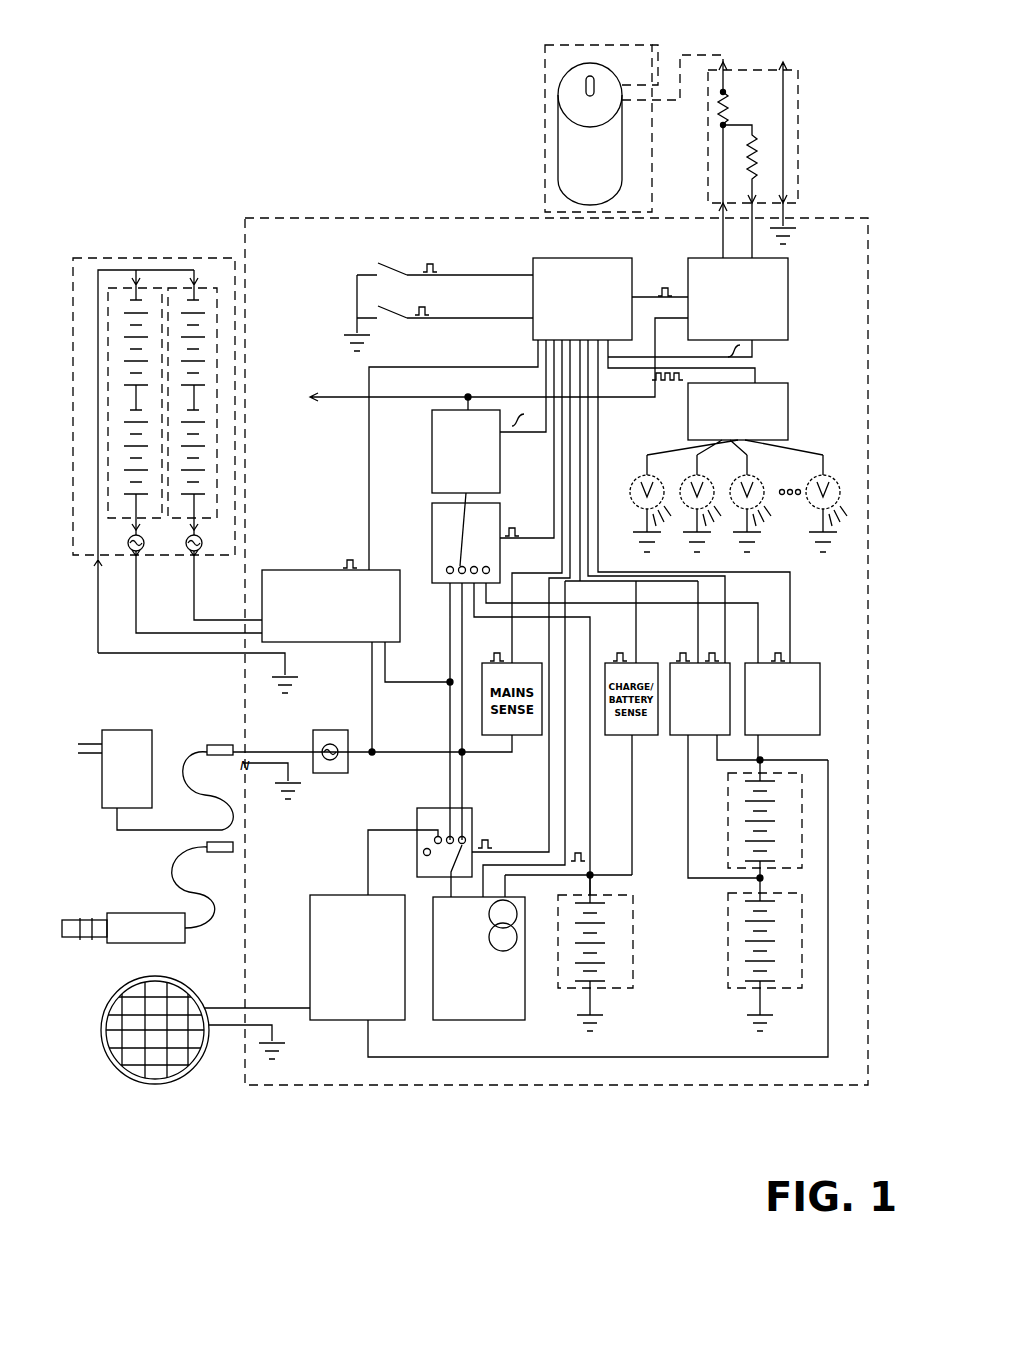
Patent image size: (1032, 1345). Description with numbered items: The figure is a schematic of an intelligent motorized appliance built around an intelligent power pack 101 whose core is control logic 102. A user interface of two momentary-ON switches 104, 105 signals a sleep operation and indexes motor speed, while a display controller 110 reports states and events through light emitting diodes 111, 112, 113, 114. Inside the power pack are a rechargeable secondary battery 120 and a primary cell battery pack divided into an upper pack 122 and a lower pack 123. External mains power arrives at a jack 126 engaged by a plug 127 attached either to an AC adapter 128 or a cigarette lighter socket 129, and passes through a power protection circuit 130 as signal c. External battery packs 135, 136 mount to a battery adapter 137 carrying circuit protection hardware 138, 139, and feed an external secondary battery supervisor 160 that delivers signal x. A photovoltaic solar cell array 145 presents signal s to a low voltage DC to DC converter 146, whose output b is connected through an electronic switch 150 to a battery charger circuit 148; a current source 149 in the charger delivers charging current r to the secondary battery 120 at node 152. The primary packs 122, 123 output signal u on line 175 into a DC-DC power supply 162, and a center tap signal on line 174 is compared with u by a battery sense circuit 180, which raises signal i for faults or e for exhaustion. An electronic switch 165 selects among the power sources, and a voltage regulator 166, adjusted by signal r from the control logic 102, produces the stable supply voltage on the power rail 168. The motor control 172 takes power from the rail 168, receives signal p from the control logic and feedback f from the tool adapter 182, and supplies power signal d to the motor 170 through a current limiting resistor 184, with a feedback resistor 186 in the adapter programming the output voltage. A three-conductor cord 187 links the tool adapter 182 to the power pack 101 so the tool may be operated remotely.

The intelligent power pack 101 is at (410, 218).
The control logic 102 is at (545, 258).
The momentary-ON switch 104 is at (398, 270).
The momentary-ON switch 105 is at (408, 310).
The display controller 110 is at (790, 410).
The light emitting diode 111 is at (630, 480).
The light emitting diode 112 is at (686, 503).
The light emitting diode 113 is at (738, 505).
The light emitting diode 114 is at (810, 500).
The rechargeable secondary battery 120 is at (637, 941).
The upper primary cell battery pack 122 is at (800, 812).
The lower primary cell battery pack 123 is at (802, 932).
The jack 126 is at (253, 752).
The plug 127 is at (214, 745).
The AC adapter 128 is at (102, 800).
The cigarette lighter socket 129 is at (80, 913).
The power protection circuit 130 is at (352, 773).
The external battery pack 135 is at (118, 285).
The external battery pack 136 is at (200, 285).
The battery adapter 137 is at (88, 258).
The circuit protection hardware 138 is at (150, 552).
The circuit protection hardware 139 is at (208, 552).
The photovoltaic solar cell array 145 is at (132, 1086).
The low voltage DC to DC converter 146 is at (310, 962).
The battery charger circuit 148 is at (473, 1020).
The current source 149 is at (495, 948).
The electronic switch 150 is at (468, 812).
The node 152 is at (598, 876).
The external secondary battery supervisor 160 is at (312, 570).
The DC-DC power supply 162 is at (820, 715).
The electronic switch 165 is at (432, 508).
The voltage regulator 166 is at (432, 465).
The power rail 168 is at (344, 408).
The motor 170 is at (545, 145).
The motor control 172 is at (788, 292).
The center tap line 174 is at (688, 815).
The power signal line 175 is at (814, 760).
The battery sense circuit 180 is at (670, 663).
The tool adapter 182 is at (800, 148).
The current limiting resistor 184 is at (722, 93).
The feedback resistor 186 is at (758, 178).
The 3-conductor cord 187 is at (790, 240).